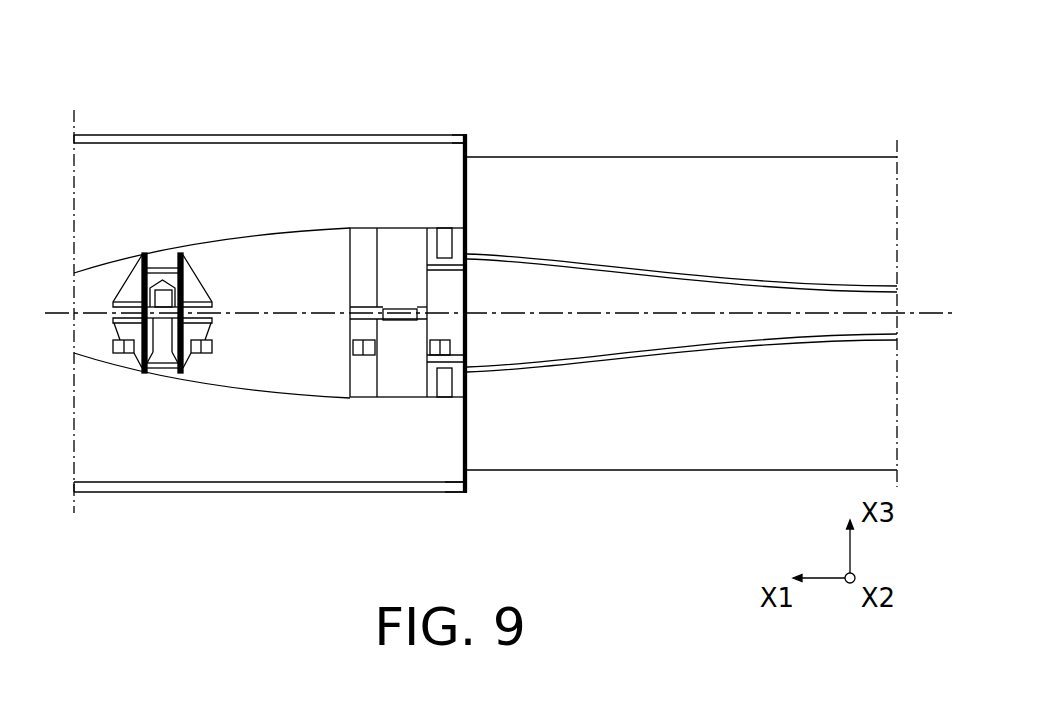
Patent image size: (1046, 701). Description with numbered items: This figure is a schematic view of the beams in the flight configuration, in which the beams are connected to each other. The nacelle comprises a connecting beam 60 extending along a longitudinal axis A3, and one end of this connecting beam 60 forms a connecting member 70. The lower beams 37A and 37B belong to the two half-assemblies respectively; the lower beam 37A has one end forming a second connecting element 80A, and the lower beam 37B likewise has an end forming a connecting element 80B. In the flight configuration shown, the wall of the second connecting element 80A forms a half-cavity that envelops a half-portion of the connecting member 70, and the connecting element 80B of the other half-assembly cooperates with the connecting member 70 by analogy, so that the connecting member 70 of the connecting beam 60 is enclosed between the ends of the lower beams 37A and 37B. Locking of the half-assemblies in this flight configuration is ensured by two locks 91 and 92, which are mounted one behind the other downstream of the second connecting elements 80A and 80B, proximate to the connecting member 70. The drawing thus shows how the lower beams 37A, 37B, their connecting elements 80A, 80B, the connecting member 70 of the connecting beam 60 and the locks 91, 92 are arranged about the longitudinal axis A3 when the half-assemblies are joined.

The lower beam 37A is at (335, 178).
The lower beam 37B is at (245, 483).
The connecting member 70 is at (448, 187).
The second connecting element 80A is at (455, 140).
The connecting element 80B is at (452, 490).
The connecting beam 60 is at (728, 145).
The lock 91 is at (398, 324).
The lock 92 is at (162, 380).
The longitudinal axis A3 is at (943, 312).